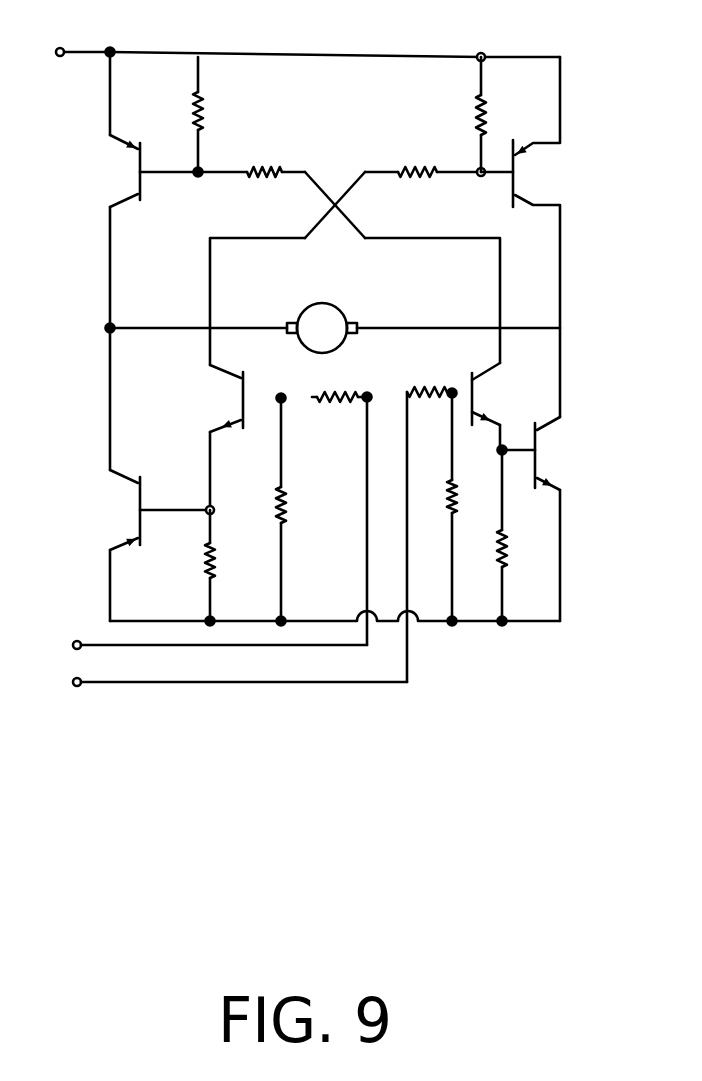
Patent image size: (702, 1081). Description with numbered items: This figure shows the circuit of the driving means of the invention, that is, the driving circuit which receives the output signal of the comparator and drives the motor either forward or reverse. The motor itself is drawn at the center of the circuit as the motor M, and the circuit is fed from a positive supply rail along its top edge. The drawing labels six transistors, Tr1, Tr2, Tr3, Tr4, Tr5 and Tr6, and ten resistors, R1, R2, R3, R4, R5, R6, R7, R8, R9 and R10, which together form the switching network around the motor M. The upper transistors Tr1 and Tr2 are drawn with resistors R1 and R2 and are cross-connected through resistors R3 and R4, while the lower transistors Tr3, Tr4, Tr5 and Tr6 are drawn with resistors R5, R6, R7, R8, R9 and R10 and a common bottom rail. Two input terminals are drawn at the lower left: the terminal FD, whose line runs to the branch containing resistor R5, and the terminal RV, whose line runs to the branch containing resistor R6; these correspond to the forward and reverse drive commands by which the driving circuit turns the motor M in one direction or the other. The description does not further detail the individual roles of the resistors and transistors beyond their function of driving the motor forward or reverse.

The resistor R1 is at (217, 114).
The resistor R2 is at (499, 114).
The cross-coupling resistor R3 is at (251, 159).
The cross-coupling resistor R4 is at (423, 159).
The resistor R5 is at (342, 505).
The resistor R6 is at (429, 521).
The resistor R7 is at (227, 565).
The resistor R8 is at (299, 508).
The resistor R9 is at (470, 507).
The resistor R10 is at (522, 535).
The transistor Tr1 is at (142, 171).
The transistor Tr2 is at (533, 237).
The transistor Tr3 is at (496, 406).
The transistor Tr4 is at (216, 437).
The transistor Tr5 is at (148, 510).
The transistor Tr6 is at (543, 519).
The motor M is at (335, 328).
The forward drive input terminal FD is at (218, 630).
The reverse drive input terminal RV is at (238, 668).